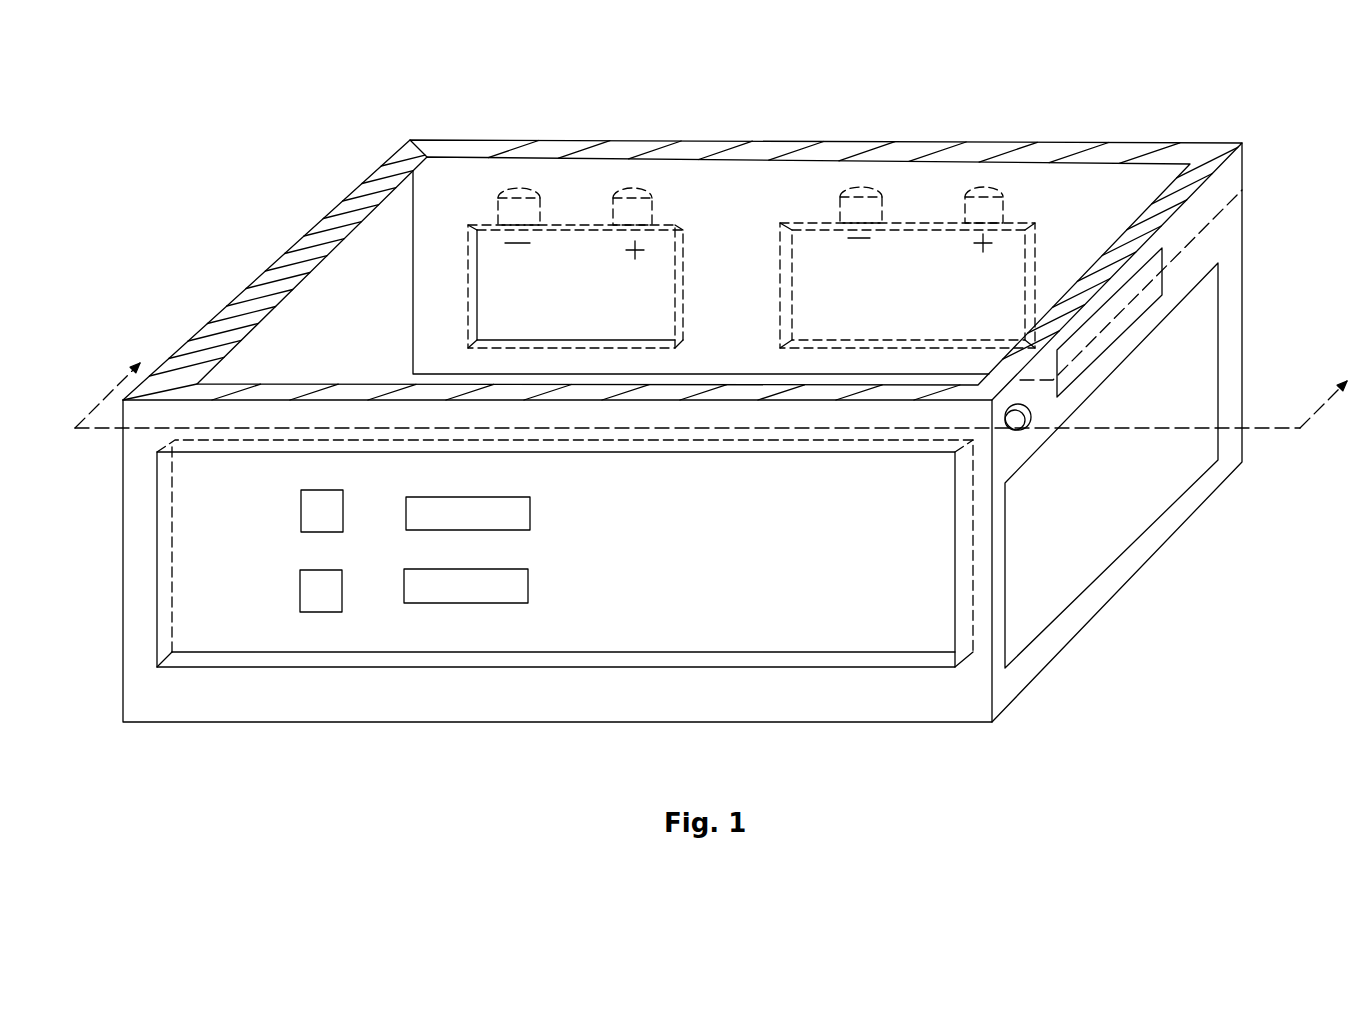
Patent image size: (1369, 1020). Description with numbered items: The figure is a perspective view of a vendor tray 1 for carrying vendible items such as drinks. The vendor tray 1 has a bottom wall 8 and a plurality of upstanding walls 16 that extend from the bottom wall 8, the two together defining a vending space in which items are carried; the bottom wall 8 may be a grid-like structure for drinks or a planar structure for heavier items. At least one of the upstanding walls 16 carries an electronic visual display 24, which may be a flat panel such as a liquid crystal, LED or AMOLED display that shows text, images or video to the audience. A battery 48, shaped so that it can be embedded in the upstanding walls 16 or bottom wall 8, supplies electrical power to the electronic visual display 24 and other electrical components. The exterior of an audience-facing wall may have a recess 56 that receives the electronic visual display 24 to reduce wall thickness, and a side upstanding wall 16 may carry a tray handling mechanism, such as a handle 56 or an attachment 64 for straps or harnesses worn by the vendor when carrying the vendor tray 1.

The vendor tray 1 is at (495, 90).
The bottom wall 8 is at (915, 392).
The upstanding walls 16 is at (137, 508).
The electronic visual display 24 is at (210, 619).
The battery 48 is at (565, 262).
The recess 56 is at (1159, 281).
The attachment 64 is at (1018, 430).